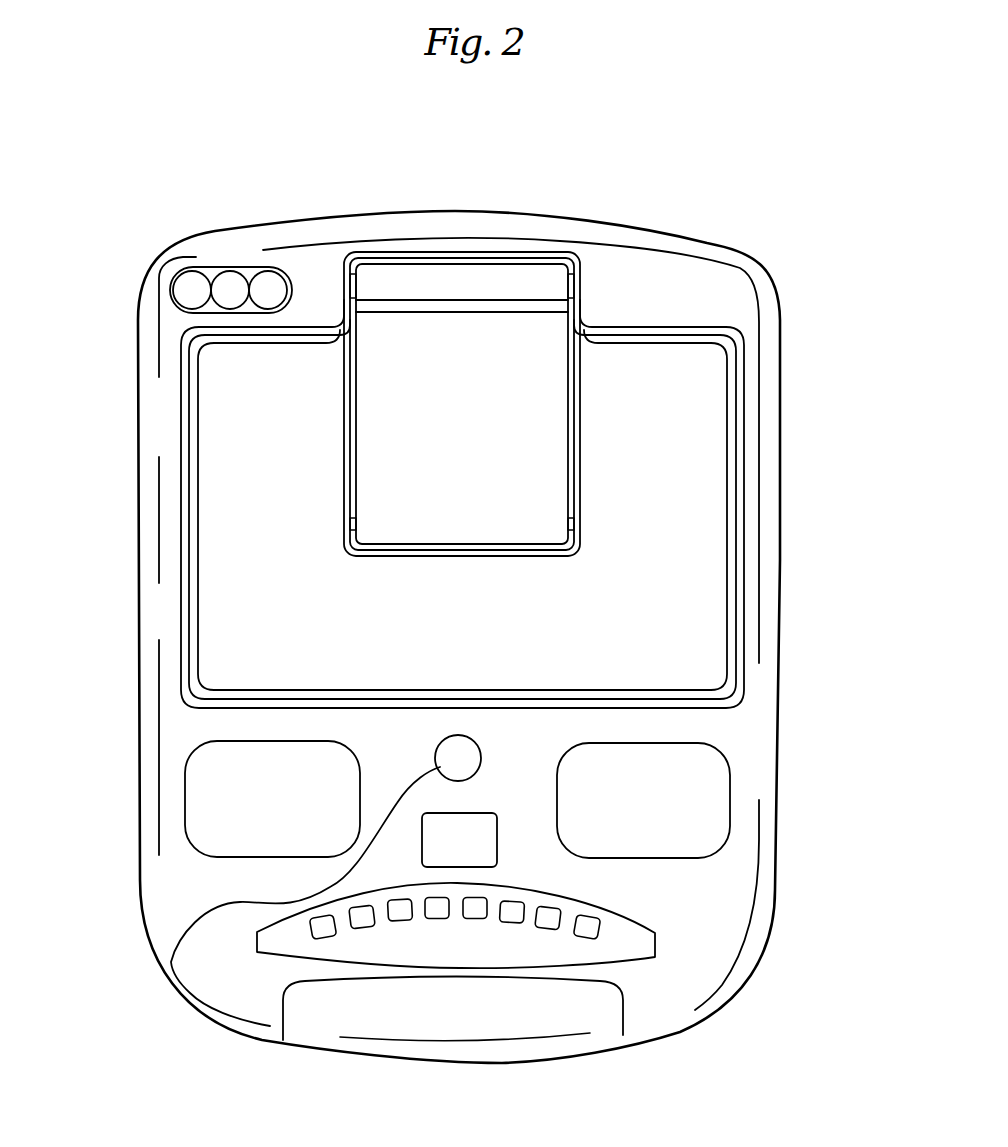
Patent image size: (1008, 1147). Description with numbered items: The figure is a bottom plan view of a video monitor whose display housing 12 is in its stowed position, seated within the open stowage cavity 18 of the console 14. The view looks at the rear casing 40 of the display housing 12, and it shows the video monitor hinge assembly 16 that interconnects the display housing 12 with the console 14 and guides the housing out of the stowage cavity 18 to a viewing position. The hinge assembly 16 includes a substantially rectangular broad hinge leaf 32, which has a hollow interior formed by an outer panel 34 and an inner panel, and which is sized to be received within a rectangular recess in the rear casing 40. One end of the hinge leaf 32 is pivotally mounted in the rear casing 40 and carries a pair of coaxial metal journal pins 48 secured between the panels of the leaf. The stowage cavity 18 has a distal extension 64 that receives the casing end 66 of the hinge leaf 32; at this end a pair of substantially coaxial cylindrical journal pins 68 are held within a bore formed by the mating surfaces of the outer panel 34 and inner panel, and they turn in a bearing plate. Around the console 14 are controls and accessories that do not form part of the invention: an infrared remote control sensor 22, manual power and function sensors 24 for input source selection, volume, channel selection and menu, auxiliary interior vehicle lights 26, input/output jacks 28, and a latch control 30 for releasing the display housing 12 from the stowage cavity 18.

The display housing 12 is at (246, 627).
The console 14 is at (779, 690).
The video monitor hinge assembly 16 is at (220, 470).
The stowage cavity 18 is at (745, 548).
The infrared remote control sensor 22 is at (590, 1032).
The manual power and function sensors 24 is at (590, 928).
The auxiliary interior vehicle lights 26 is at (228, 857).
The input/output jacks 28 is at (208, 267).
The latch control 30 is at (170, 963).
The hinge leaf 32 is at (363, 500).
The outer panel 34 is at (222, 470).
The rear casing 40 is at (458, 643).
The journal pins 48 is at (348, 523).
The distal extension 64 is at (393, 263).
The casing end 66 is at (471, 277).
The journal pins 68 is at (350, 284).